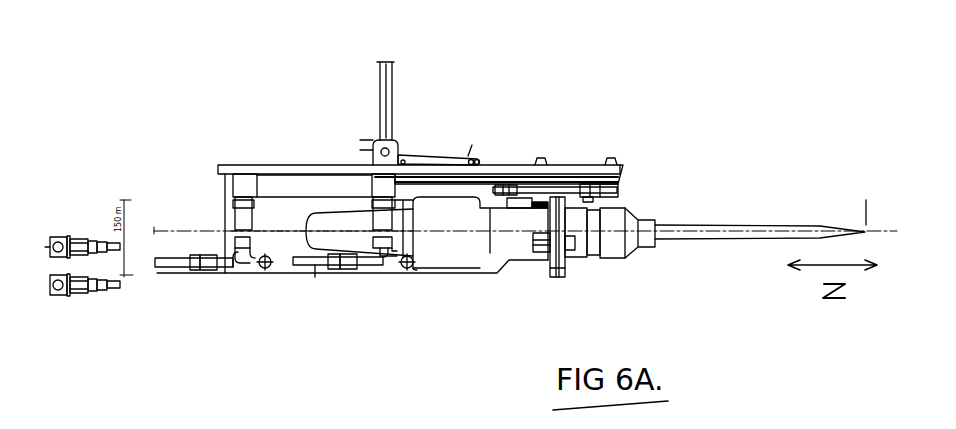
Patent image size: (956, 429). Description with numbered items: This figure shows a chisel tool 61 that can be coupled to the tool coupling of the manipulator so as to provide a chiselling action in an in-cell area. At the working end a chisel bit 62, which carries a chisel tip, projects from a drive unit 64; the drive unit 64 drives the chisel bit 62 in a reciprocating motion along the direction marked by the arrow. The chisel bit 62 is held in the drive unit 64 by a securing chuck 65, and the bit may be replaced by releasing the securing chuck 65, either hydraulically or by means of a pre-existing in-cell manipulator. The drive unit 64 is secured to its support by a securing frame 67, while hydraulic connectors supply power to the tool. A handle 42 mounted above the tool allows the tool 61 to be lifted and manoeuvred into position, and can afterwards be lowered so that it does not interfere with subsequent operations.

The tool 61 is at (563, 56).
The handle 42 is at (418, 148).
The chisel bit 62 is at (737, 195).
The drive unit 64 is at (452, 253).
The securing chuck 65 is at (643, 247).
The securing frame 67 is at (572, 270).